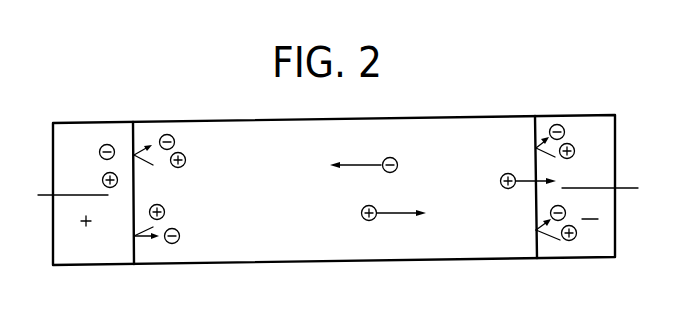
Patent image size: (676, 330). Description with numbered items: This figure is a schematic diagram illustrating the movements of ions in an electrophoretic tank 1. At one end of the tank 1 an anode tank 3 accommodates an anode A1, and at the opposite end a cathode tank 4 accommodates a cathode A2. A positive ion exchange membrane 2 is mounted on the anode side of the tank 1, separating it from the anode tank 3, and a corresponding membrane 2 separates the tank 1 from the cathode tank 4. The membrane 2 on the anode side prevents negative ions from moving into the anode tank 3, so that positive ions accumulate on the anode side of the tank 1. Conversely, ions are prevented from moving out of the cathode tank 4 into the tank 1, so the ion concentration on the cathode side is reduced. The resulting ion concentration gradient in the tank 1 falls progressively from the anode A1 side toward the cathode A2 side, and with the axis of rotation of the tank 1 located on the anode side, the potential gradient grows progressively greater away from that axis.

The electrophoretic tank 1 is at (340, 253).
The positive ion exchange membrane 2 is at (134, 250).
The anode tank 3 is at (105, 255).
The cathode tank 4 is at (598, 250).
The anode A1 is at (80, 195).
The cathode A2 is at (583, 188).